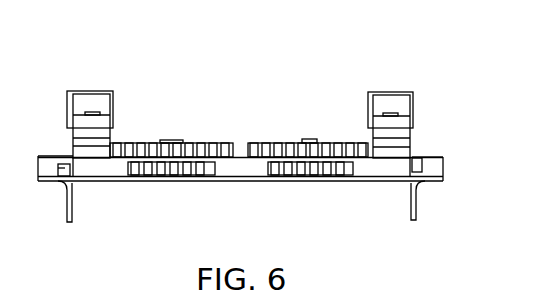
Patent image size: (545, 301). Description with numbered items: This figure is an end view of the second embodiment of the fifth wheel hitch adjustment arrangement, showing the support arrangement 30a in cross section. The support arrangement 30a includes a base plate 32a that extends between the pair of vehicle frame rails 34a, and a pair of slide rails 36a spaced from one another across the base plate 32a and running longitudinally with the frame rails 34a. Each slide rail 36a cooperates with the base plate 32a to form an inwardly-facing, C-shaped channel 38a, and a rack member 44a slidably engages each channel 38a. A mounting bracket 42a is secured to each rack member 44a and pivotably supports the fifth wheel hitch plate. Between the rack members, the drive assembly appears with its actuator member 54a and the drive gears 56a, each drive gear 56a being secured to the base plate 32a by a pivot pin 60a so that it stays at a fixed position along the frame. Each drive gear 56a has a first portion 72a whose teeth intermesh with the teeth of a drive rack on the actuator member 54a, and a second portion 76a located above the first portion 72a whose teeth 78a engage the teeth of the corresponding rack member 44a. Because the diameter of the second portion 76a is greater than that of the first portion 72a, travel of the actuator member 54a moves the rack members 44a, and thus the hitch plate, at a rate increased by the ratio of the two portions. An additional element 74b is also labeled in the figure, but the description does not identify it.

The support arrangement 30a is at (418, 117).
The base plate 32a is at (112, 182).
The frame rails 34a is at (416, 199).
The slide rails 36a is at (440, 167).
The C-shaped channel 38a is at (420, 157).
The mounting bracket 42a is at (413, 102).
The rack member 44a is at (388, 166).
The actuator member 54a is at (232, 172).
The drive gear 56a is at (281, 134).
The pivot pin 60a is at (313, 139).
The first portion 72a is at (280, 175).
The lower contact row 74b is at (342, 175).
The second portion 76a is at (263, 142).
The teeth 78a is at (336, 140).